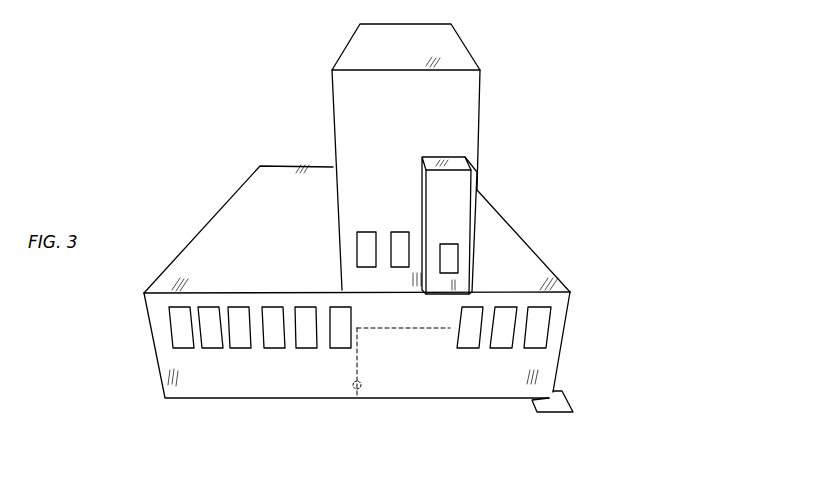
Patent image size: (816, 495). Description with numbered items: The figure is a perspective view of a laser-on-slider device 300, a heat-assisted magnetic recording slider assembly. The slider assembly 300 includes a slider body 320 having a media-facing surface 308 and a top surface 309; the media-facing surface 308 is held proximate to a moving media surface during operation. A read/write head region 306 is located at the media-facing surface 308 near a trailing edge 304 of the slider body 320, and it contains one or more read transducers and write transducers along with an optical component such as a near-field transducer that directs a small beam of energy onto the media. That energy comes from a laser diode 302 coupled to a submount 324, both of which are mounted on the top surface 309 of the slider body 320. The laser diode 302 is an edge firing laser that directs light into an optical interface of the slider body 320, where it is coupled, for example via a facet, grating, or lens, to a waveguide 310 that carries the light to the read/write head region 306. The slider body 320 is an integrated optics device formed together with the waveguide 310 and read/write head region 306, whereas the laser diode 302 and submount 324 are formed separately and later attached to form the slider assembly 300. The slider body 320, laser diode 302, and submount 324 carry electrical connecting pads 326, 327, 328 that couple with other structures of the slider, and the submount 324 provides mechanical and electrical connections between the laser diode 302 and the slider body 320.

The laser-on-slider device 300 is at (580, 90).
The laser diode 302 is at (473, 167).
The trailing edge 304 is at (233, 388).
The read/write head region 306 is at (357, 396).
The media-facing surface 308 is at (570, 413).
The top surface 309 is at (532, 271).
The waveguide 310 is at (390, 331).
The slider body 320 is at (217, 190).
The submount 324 is at (463, 47).
The electrical connecting pads 326 is at (212, 345).
The electrical connecting pads 327 is at (455, 256).
The electrical connecting pads 328 is at (395, 232).